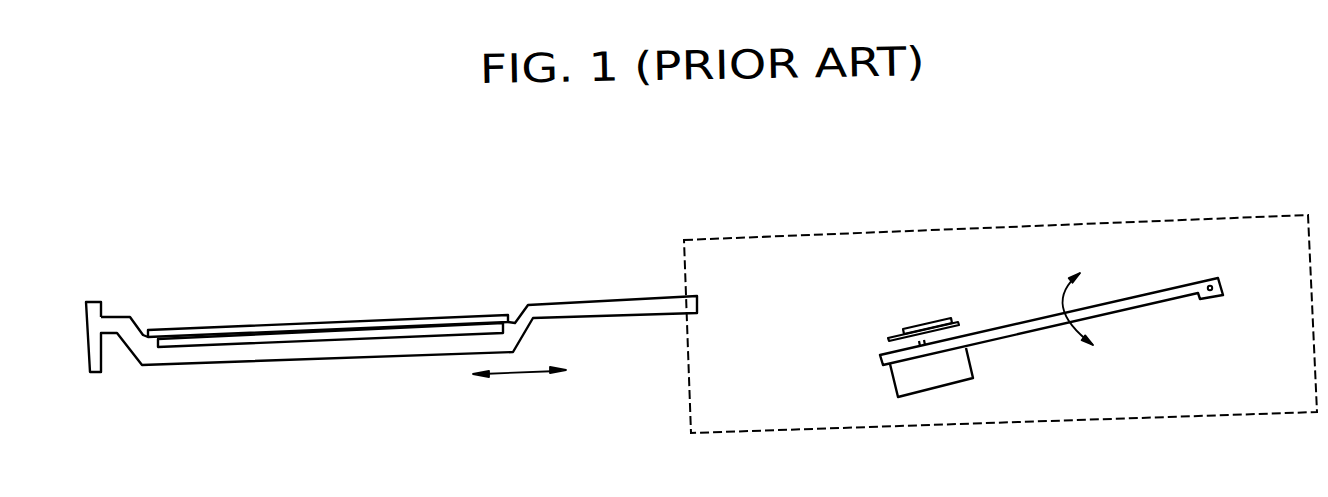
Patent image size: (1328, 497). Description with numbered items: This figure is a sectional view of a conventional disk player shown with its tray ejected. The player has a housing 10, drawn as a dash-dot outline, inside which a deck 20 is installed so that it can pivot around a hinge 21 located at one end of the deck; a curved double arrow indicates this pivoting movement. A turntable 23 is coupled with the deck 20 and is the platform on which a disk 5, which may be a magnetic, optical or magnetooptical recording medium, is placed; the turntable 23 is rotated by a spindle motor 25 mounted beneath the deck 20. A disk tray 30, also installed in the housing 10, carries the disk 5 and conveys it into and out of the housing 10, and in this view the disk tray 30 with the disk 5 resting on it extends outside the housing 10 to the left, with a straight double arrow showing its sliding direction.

The disk 5 is at (355, 321).
The housing 10 is at (1066, 224).
The deck 20 is at (1128, 318).
The hinge 21 is at (1206, 286).
The turntable 23 is at (903, 328).
The spindle motor 25 is at (920, 380).
The disk tray 30 is at (337, 364).